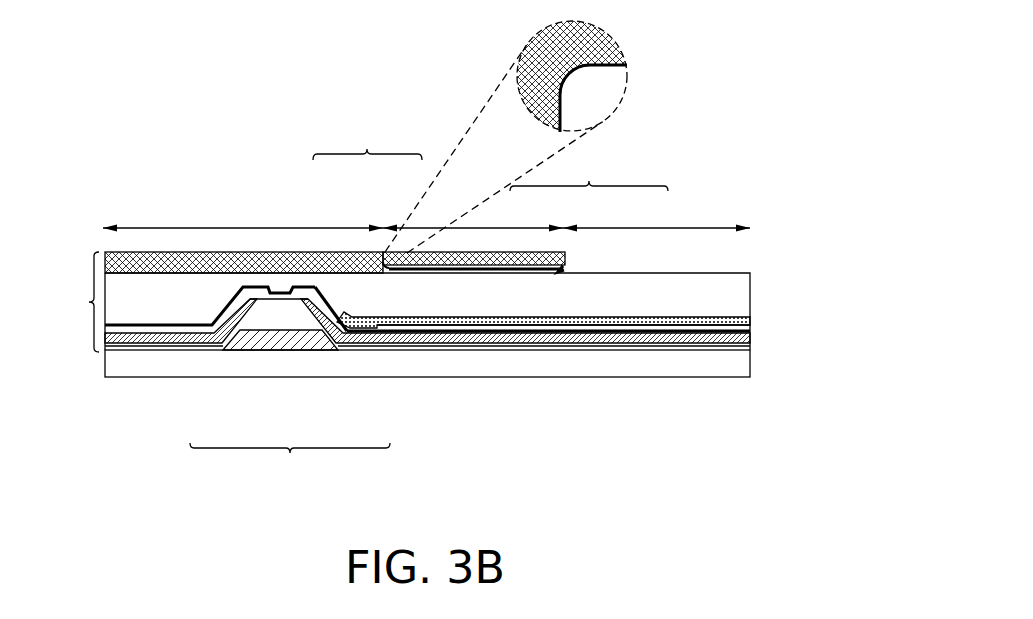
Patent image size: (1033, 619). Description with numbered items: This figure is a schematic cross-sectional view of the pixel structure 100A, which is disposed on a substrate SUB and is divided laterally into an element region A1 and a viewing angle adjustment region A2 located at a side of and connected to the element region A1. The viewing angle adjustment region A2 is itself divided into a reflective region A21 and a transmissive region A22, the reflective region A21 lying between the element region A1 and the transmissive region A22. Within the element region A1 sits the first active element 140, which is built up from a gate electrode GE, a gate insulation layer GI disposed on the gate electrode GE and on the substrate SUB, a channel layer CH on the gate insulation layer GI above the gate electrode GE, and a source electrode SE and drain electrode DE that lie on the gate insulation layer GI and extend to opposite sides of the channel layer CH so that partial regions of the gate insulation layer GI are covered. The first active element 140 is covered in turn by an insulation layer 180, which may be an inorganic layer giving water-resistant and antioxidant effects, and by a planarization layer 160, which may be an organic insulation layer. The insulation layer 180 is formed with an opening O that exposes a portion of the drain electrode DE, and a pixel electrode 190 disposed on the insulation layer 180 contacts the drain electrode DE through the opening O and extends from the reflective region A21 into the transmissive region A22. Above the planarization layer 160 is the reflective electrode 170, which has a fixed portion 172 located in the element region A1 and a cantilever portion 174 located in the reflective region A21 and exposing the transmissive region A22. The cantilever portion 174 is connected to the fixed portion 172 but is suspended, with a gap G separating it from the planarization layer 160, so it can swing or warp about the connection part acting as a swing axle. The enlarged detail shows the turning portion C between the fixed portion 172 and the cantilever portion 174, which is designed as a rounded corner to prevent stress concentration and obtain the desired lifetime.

The pixel structure 100A is at (64, 302).
The first active element 140 is at (290, 467).
The planarization layer 160 is at (730, 296).
The reflective electrode 170 is at (367, 138).
The fixed portion 172 is at (381, 265).
The cantilever portion 174 is at (425, 252).
The insulation layer 180 is at (733, 330).
The pixel electrode 190 is at (577, 327).
The substrate SUB is at (730, 363).
The source electrode SE is at (187, 330).
The gate electrode GE is at (258, 337).
The channel layer CH is at (282, 313).
The drain electrode DE is at (343, 325).
The gate insulation layer GI is at (397, 345).
The opening O is at (395, 331).
The gap G is at (567, 268).
The turning portion C is at (574, 79).
The element region A1 is at (243, 212).
The viewing angle adjustment region A2 is at (589, 171).
The reflective region A21 is at (473, 212).
The transmissive region A22 is at (656, 213).